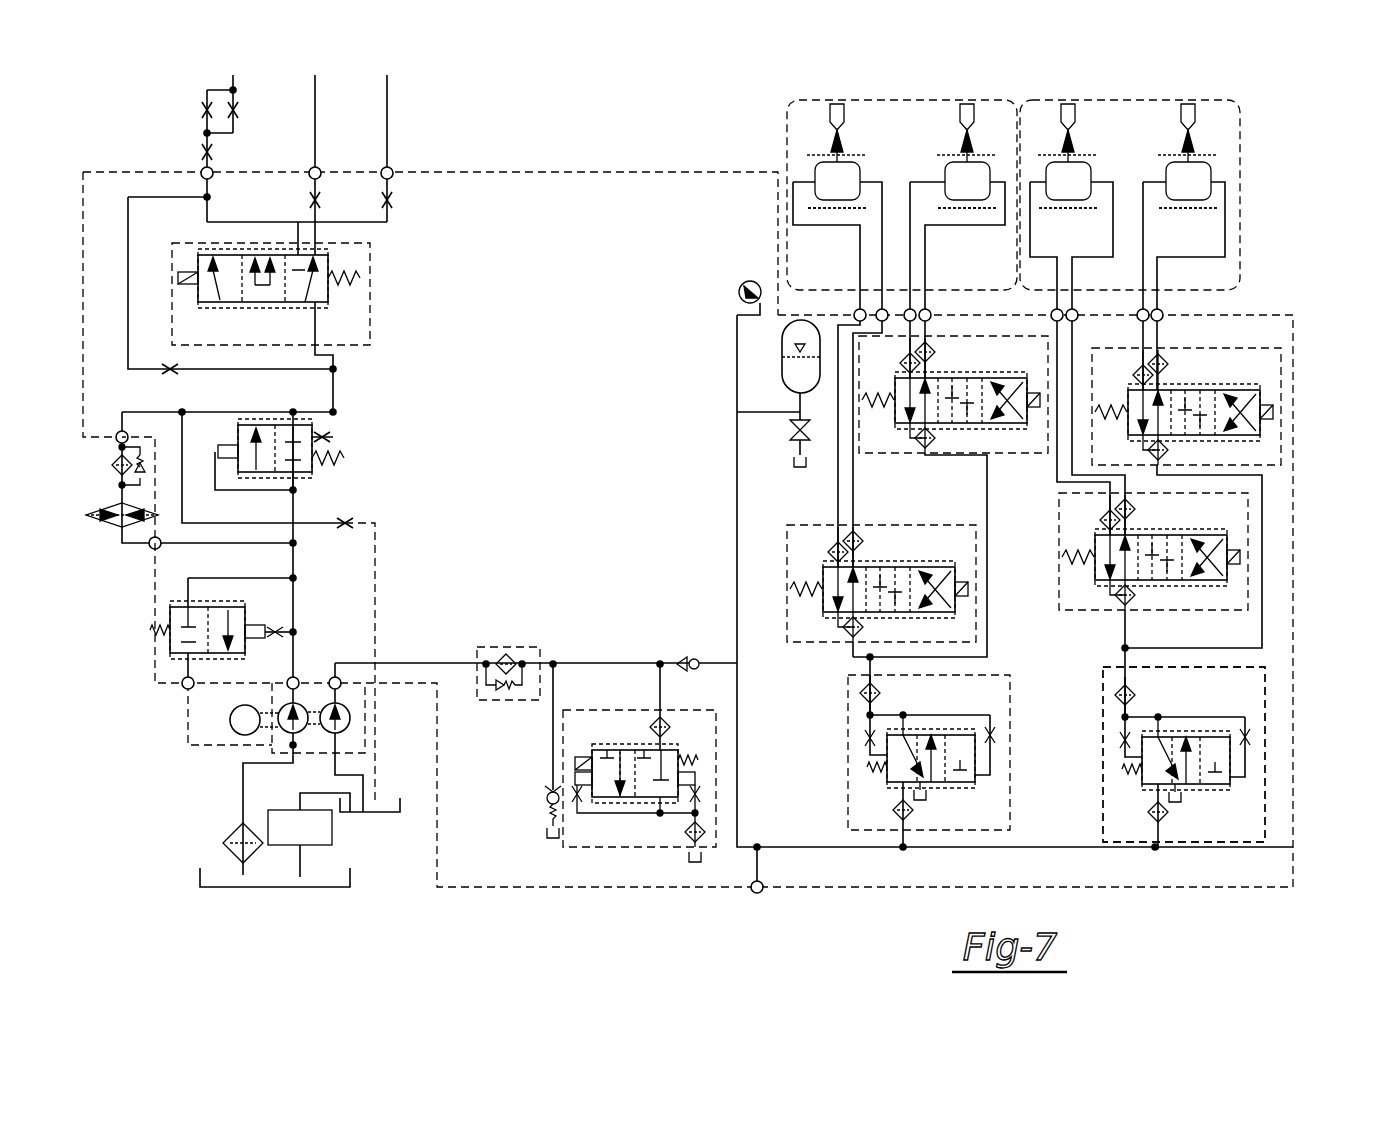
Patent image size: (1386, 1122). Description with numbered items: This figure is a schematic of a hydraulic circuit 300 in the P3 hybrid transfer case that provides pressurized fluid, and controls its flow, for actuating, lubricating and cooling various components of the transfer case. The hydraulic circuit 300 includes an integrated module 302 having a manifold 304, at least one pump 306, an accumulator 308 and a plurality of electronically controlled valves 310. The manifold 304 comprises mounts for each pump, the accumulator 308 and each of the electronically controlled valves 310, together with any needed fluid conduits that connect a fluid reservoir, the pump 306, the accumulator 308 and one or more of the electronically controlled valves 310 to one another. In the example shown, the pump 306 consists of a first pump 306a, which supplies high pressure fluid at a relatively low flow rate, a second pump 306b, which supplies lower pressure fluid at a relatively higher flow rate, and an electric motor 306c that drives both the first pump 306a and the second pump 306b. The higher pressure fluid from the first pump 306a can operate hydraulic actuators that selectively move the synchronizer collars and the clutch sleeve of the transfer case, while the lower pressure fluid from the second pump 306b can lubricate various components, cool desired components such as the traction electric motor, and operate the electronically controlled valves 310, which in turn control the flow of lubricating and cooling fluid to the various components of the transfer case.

The hydraulic circuit 300 is at (1257, 294).
The integrated module 302 is at (1267, 655).
The manifold 304 is at (520, 172).
The pump 306 is at (312, 670).
The first pump 306a is at (352, 718).
The second pump 306b is at (285, 733).
The electric motor 306c is at (229, 720).
The accumulator 308 is at (783, 343).
The electronically controlled valves 310 is at (1003, 428).